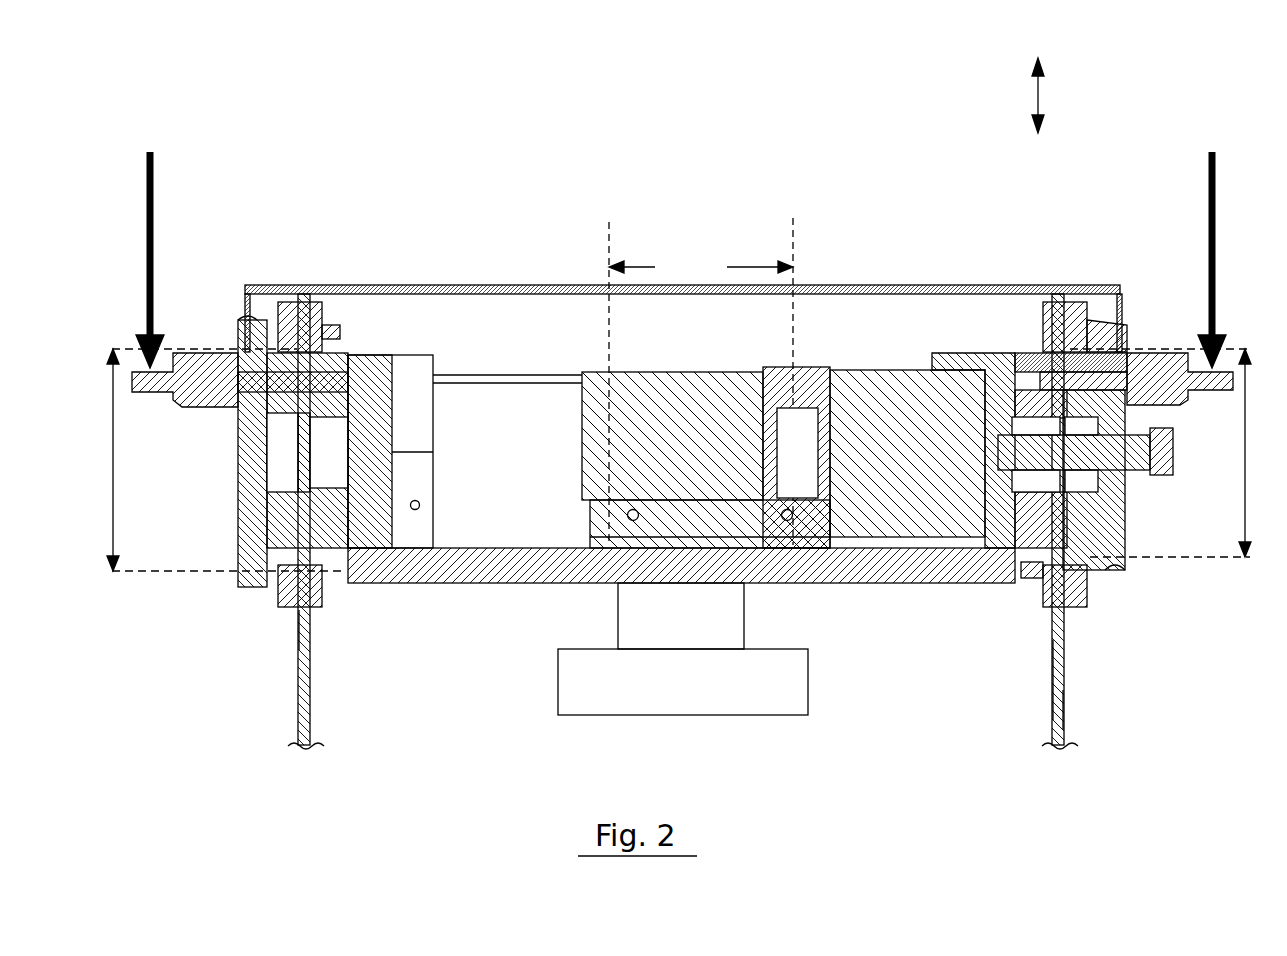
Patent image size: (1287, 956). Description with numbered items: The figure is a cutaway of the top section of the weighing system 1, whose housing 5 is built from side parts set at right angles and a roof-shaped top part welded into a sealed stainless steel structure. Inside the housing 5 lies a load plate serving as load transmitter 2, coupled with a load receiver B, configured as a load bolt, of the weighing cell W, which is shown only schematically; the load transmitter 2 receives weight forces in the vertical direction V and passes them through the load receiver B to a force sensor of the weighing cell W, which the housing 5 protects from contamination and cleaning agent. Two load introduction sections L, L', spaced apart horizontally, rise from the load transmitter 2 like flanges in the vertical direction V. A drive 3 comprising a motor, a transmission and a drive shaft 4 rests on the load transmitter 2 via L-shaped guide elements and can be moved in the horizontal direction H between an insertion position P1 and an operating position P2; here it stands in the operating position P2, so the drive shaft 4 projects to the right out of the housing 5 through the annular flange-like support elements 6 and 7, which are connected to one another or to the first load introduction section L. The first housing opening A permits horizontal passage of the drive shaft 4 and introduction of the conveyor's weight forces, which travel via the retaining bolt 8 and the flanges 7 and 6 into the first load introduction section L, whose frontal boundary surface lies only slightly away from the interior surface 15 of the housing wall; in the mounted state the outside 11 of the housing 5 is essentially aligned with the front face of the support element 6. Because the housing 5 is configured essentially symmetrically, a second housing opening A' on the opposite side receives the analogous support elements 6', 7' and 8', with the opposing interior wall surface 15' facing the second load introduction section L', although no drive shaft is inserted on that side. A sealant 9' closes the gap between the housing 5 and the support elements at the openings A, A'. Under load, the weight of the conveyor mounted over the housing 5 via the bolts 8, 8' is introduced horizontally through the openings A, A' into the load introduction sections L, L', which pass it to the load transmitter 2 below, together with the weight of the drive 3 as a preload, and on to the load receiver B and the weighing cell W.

The weighing system 1 is at (266, 210).
The load transmitter 2 is at (462, 570).
The drive 3 is at (585, 348).
The drive shaft 4 is at (1140, 455).
The housing 5 is at (845, 290).
The support element 6 is at (922, 505).
The support element 6' is at (390, 505).
The support element 7 is at (1090, 480).
The support element 7' is at (209, 451).
The retaining bolt 8 is at (1124, 314).
The retaining bolt 8' is at (240, 315).
The sealant 9' is at (273, 516).
The outside of the housing 11 is at (1058, 715).
The interior surface 15 is at (1005, 692).
The guide 15' is at (340, 643).
The first housing opening A is at (1231, 453).
The second housing opening A' is at (94, 460).
The load receiver B is at (718, 617).
The weighing cell W is at (500, 692).
The first load introduction section L is at (961, 291).
The second load introduction section L' is at (416, 300).
The horizontal direction H is at (666, 87).
The vertical direction V is at (1051, 95).
The insertion position P1 is at (632, 383).
The operating position P2 is at (760, 381).